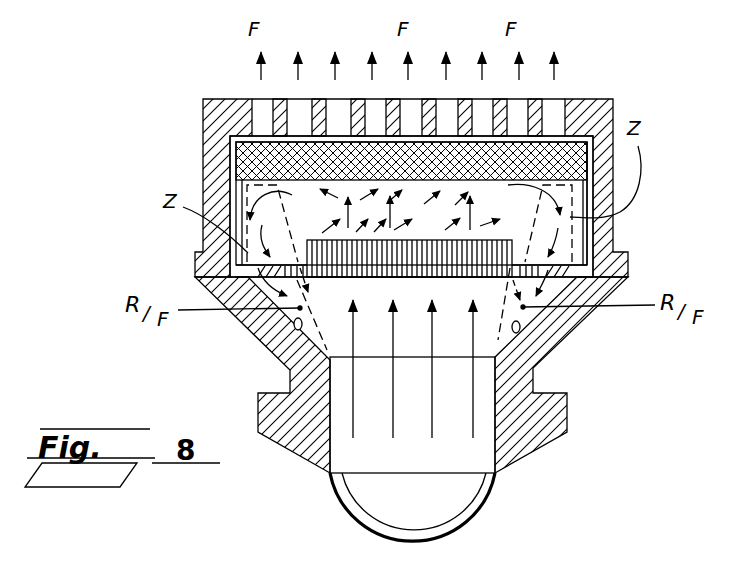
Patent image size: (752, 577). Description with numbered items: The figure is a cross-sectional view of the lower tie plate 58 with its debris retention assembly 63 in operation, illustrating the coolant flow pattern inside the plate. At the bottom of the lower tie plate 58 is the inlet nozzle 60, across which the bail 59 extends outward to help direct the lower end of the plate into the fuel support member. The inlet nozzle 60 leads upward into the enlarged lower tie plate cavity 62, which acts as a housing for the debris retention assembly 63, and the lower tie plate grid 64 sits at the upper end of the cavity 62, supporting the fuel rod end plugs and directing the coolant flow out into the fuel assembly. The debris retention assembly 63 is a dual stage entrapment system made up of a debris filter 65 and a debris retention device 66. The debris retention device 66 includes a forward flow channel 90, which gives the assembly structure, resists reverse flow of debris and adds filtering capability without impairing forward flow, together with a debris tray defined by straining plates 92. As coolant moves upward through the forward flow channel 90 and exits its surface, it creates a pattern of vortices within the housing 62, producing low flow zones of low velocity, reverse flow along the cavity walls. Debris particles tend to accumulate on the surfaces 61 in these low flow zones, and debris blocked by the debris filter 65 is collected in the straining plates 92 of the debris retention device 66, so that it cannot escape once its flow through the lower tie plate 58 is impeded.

The lower tie plate 58 is at (140, 102).
The bail 59 is at (338, 508).
The inlet nozzle 60 is at (427, 482).
The surfaces 61 is at (280, 357).
The lower tie plate cavity 62 is at (428, 352).
The debris retention assembly 63 is at (240, 275).
The lower tie plate grid 64 is at (536, 97).
The debris filter 65 is at (228, 181).
The debris retention device 66 is at (652, 268).
The forward flow channel 90 is at (512, 283).
The straining plates 92 is at (260, 232).